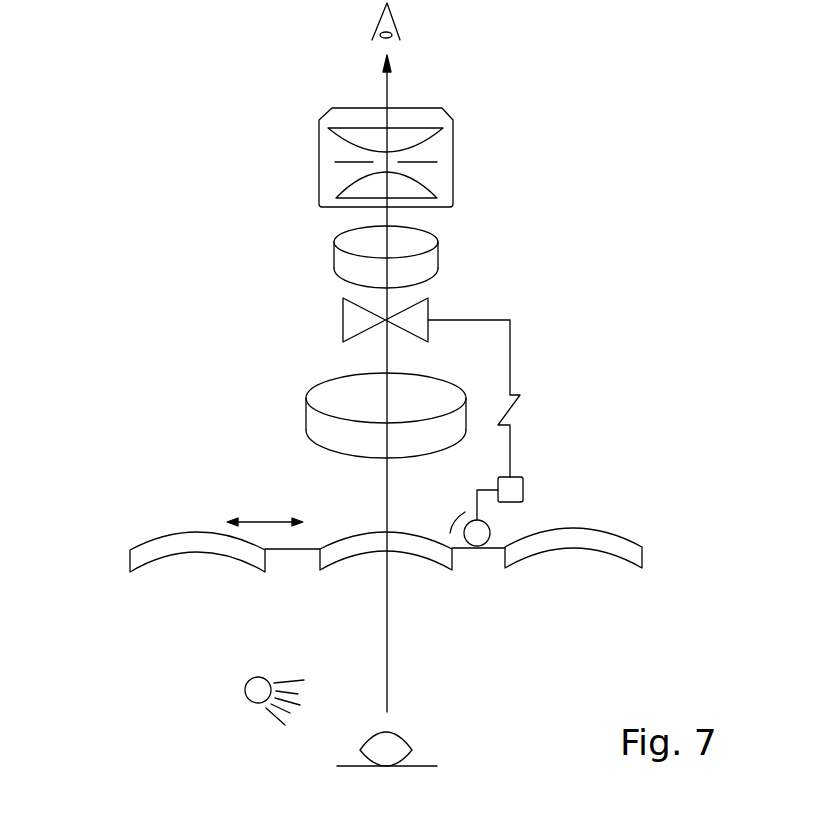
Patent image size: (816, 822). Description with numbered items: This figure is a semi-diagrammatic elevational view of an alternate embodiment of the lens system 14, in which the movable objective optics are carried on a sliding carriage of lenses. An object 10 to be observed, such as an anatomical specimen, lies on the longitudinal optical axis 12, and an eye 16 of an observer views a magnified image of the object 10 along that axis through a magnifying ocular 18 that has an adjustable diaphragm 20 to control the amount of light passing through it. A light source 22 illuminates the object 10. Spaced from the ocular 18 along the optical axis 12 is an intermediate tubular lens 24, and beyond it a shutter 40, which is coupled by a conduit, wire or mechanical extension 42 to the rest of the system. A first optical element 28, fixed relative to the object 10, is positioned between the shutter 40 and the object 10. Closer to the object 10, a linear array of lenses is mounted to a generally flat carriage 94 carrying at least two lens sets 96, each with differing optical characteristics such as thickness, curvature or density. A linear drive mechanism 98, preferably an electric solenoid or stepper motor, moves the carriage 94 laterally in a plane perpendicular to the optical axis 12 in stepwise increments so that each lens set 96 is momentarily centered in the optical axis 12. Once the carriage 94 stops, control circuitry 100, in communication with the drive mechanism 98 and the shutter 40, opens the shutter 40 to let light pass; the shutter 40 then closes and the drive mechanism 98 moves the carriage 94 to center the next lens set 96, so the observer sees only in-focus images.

The object 10 is at (392, 736).
The longitudinal optical axis 12 is at (387, 77).
The lens system 14 is at (289, 258).
The eye 16 is at (395, 22).
The ocular 18 is at (443, 147).
The adjustable diaphragm 20 is at (428, 162).
The light source 22 is at (253, 677).
The intermediate tubular lens 24 is at (428, 249).
The first optical element 28 is at (325, 396).
The shutter 40 is at (428, 308).
The conduit, wire or mechanical extension 42 is at (510, 352).
The carriage 94 is at (460, 563).
The lens sets 96 is at (152, 565).
The linear drive mechanism 98 is at (453, 512).
The control circuitry 100 is at (514, 480).